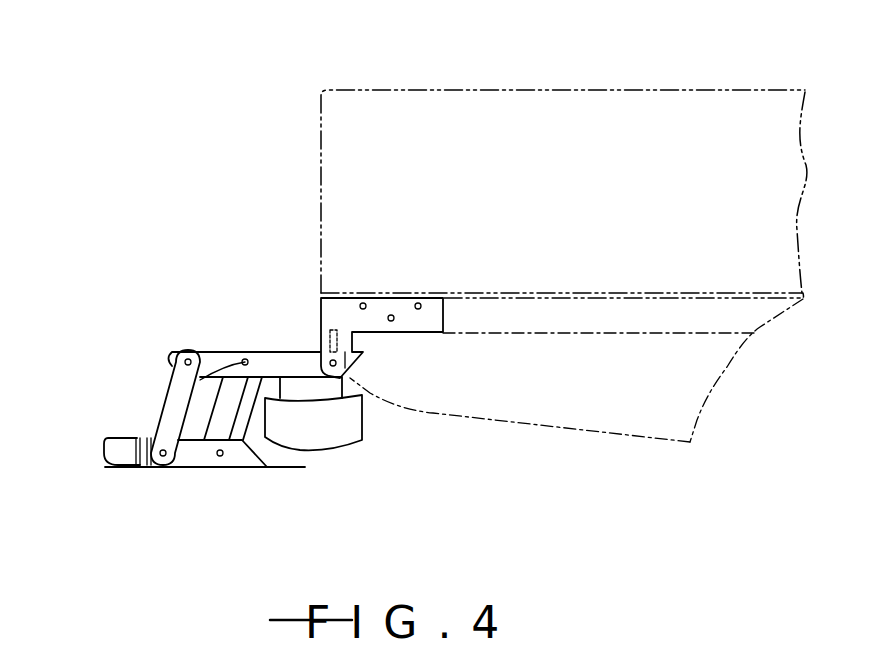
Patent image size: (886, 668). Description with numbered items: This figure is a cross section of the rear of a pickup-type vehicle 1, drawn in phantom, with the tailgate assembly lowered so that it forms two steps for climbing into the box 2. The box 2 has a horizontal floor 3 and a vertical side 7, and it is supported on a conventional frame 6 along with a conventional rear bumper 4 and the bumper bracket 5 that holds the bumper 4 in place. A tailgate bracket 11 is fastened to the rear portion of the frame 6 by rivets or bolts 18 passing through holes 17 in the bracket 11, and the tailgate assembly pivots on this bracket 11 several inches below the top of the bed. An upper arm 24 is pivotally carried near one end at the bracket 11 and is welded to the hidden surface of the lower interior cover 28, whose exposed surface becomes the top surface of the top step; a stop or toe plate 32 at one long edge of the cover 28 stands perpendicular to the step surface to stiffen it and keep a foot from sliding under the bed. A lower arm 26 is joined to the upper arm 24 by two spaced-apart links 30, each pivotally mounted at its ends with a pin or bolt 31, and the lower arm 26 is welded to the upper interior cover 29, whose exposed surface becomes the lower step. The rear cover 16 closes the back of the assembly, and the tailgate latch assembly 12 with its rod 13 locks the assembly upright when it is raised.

The vehicle 1 is at (675, 400).
The box 2 is at (727, 91).
The horizontal floor 3 is at (582, 290).
The rear bumper 4 is at (325, 438).
The bumper bracket 5 is at (308, 388).
The frame 6 is at (750, 313).
The vertical side 7 is at (647, 176).
The tailgate bracket 11 is at (343, 310).
The tailgate latch assembly 12 is at (117, 465).
The rod 13 is at (137, 444).
The rear cover 16 is at (291, 468).
The hole 17 is at (343, 372).
The rivet or bolt 18 is at (363, 309).
The upper arm 24 is at (225, 363).
The lower arm 26 is at (193, 455).
The lower interior cover 28 is at (225, 351).
The upper interior cover 29 is at (142, 445).
The link 30 is at (232, 420).
The pin or bolt 31 is at (205, 377).
The stop plate 32 is at (330, 340).